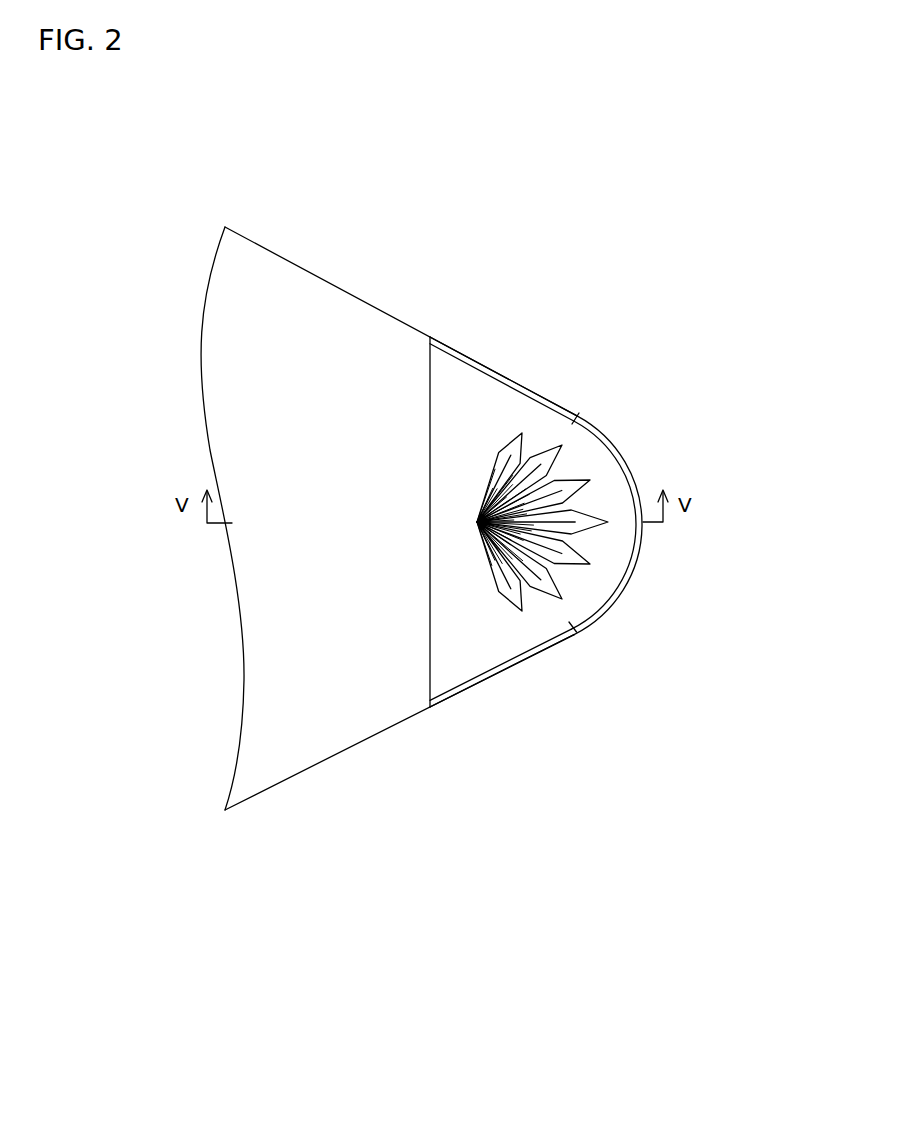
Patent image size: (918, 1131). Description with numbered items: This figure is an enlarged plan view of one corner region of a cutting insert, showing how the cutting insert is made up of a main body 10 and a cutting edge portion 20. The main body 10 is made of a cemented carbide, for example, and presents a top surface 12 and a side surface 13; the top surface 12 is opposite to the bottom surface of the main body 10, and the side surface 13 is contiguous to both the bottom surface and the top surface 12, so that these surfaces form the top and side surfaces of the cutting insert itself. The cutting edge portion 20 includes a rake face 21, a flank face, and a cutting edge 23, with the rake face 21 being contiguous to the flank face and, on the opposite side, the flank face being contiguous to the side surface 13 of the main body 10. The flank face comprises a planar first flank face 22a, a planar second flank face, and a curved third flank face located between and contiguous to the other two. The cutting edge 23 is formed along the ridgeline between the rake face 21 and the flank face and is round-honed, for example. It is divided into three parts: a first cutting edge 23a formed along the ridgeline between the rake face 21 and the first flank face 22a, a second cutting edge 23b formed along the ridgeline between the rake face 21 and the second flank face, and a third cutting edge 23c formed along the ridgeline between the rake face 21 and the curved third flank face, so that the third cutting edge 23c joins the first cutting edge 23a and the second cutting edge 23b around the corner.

The main body 10 is at (190, 396).
The top surface 12 is at (358, 717).
The side surface 13 is at (352, 295).
The cutting edge portion 20 is at (619, 511).
The rake face 21 is at (482, 403).
The first flank face 22a is at (505, 593).
The cutting edge 23 is at (619, 521).
The first cutting edge 23a is at (594, 679).
The second cutting edge 23b is at (547, 385).
The third cutting edge 23c is at (603, 422).